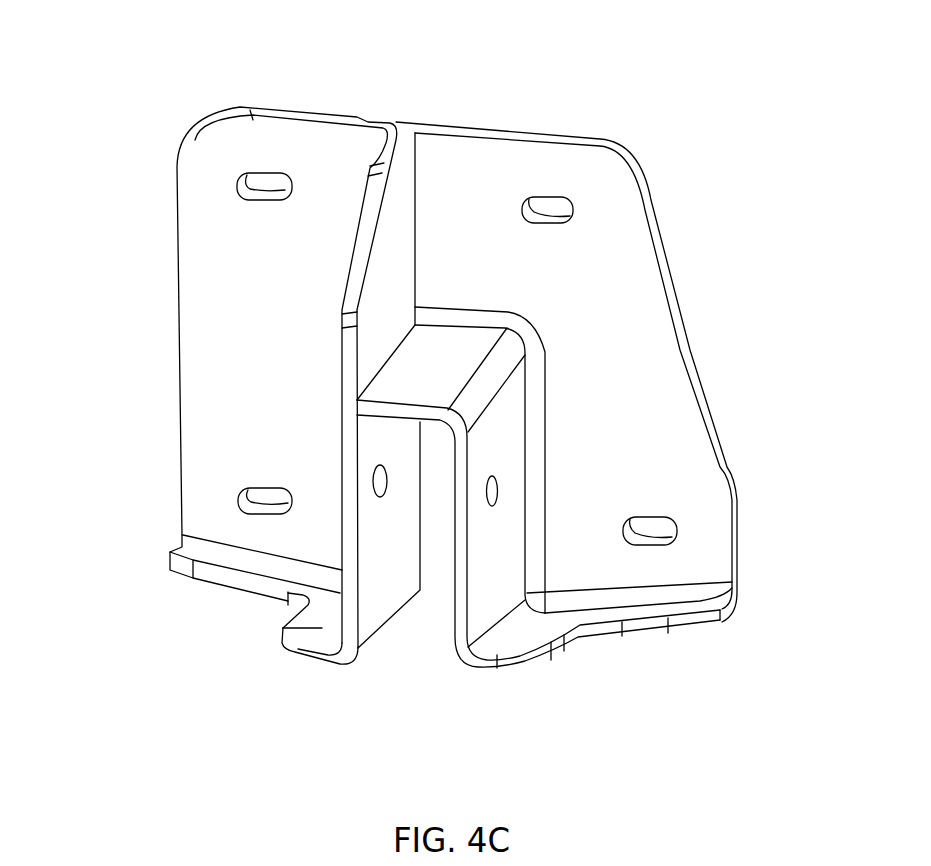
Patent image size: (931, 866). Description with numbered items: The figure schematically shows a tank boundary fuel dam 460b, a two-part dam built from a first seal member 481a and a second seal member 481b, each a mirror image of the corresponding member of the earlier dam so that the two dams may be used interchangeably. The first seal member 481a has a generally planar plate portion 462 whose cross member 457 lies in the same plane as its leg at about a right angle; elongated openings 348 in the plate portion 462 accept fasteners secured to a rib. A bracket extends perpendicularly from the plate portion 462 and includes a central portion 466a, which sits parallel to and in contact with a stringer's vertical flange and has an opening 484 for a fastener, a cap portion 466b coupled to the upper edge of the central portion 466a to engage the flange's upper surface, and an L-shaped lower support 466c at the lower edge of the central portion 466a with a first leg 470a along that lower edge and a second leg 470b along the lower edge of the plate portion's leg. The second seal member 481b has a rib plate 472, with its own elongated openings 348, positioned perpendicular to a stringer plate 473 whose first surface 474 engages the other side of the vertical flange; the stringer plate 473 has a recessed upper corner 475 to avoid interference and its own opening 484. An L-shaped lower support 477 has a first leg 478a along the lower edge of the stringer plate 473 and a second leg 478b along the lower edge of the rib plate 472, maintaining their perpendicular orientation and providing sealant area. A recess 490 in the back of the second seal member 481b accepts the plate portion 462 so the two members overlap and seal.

The tank boundary fuel dam 460b is at (637, 134).
The rib plate 472 is at (302, 268).
The plate portion 462 is at (627, 355).
The central portion 466a is at (483, 570).
The cap portion 466b is at (458, 365).
The lower support 466c is at (605, 638).
The first leg 470a is at (537, 640).
The second leg 470b is at (680, 610).
The stringer plate 473 is at (393, 252).
The first surface 474 is at (370, 598).
The recessed upper corner 475 is at (370, 213).
The lower support 477 is at (273, 640).
The first leg 478a is at (320, 628).
The second leg 478b is at (170, 552).
The first seal member 481a is at (575, 180).
The second seal member 481b is at (283, 148).
The opening 484 is at (373, 482).
The recess 490 is at (387, 126).
The cross member 457 is at (477, 240).
The openings 348 is at (287, 189).